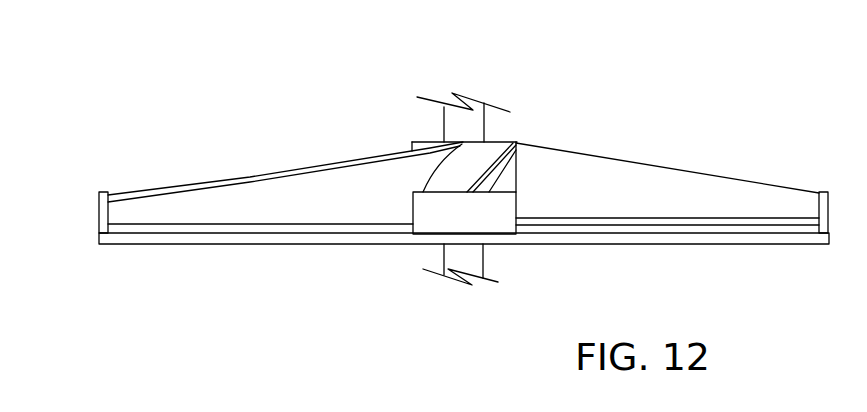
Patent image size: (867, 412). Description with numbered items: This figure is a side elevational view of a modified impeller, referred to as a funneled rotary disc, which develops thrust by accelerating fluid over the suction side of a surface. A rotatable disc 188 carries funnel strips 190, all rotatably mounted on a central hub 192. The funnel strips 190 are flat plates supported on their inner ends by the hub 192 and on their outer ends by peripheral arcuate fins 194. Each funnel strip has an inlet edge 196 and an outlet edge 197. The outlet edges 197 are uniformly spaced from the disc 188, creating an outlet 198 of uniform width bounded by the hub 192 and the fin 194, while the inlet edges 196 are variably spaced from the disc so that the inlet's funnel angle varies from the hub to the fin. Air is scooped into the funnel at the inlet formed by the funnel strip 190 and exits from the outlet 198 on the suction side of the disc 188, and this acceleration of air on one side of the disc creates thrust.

The rotatable disc 188 is at (700, 246).
The funnel strips 190 is at (619, 158).
The hub 192 is at (518, 168).
The peripheral arcuate fins 194 is at (97, 215).
The inlet edge 196 is at (300, 168).
The outlet edge 197 is at (356, 226).
The outlet 198 is at (174, 230).